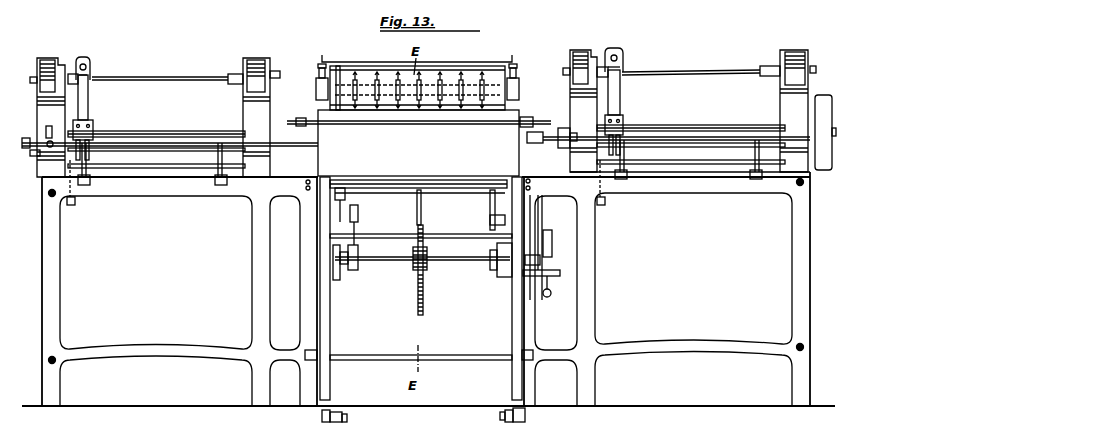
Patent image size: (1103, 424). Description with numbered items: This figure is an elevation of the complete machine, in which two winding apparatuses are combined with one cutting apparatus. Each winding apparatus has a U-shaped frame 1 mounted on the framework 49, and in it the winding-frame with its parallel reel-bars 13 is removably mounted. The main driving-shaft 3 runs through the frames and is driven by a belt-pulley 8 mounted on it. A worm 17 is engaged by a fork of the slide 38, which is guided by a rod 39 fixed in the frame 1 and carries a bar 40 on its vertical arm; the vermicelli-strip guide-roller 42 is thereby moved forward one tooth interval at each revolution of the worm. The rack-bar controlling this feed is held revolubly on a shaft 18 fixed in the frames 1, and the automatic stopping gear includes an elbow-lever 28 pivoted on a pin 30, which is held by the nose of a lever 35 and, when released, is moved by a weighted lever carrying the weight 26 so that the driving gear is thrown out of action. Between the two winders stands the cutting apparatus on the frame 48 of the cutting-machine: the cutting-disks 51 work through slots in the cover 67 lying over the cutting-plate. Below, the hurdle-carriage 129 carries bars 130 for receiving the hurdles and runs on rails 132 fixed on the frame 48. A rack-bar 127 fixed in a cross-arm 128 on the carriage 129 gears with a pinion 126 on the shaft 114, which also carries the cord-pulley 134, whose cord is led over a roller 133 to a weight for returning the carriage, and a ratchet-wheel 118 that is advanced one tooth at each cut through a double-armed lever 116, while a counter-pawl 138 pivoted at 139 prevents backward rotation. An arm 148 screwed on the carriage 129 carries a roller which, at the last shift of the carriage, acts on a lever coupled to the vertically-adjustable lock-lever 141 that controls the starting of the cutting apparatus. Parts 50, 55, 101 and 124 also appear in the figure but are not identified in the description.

The U-shaped frame 1 is at (46, 58).
The main driving-shaft 3 is at (282, 141).
The belt-pulley 8 is at (822, 100).
The reel-bars 13 is at (155, 77).
The worm 17 is at (88, 150).
The shaft 18 is at (150, 168).
The weight 26 is at (76, 205).
The elbow-lever 28 is at (52, 141).
The pin 30 is at (47, 142).
The lever 35 is at (47, 147).
The slide 38 is at (92, 125).
The rod 39 is at (175, 131).
The bar 40 is at (88, 95).
The vermicelli-strip guide-roller 42 is at (88, 57).
The frame of the cutting-machine 48 is at (324, 323).
The framework 49 is at (50, 276).
The end plate 50 is at (330, 72).
The cutting-disks 51 is at (462, 72).
The bearing 55 is at (320, 100).
The cover 67 is at (347, 72).
The shaft 101 is at (413, 125).
The shaft 114 is at (455, 262).
The double-armed lever 116 is at (542, 206).
The ratchet-wheel 118 is at (554, 243).
The rod 124 is at (540, 222).
The pinion 126 is at (425, 300).
The rack-bar 127 is at (421, 200).
The cross-arm 128 is at (420, 205).
The hurdle-carriage 129 is at (345, 195).
The bars 130 is at (465, 180).
The rails 132 is at (492, 218).
The roller 133 is at (358, 212).
The cord-pulley 134 is at (351, 270).
The counter-pawl 138 is at (548, 274).
The pivot 139 is at (549, 297).
The lock-lever 141 is at (418, 143).
The arm 148 is at (490, 203).